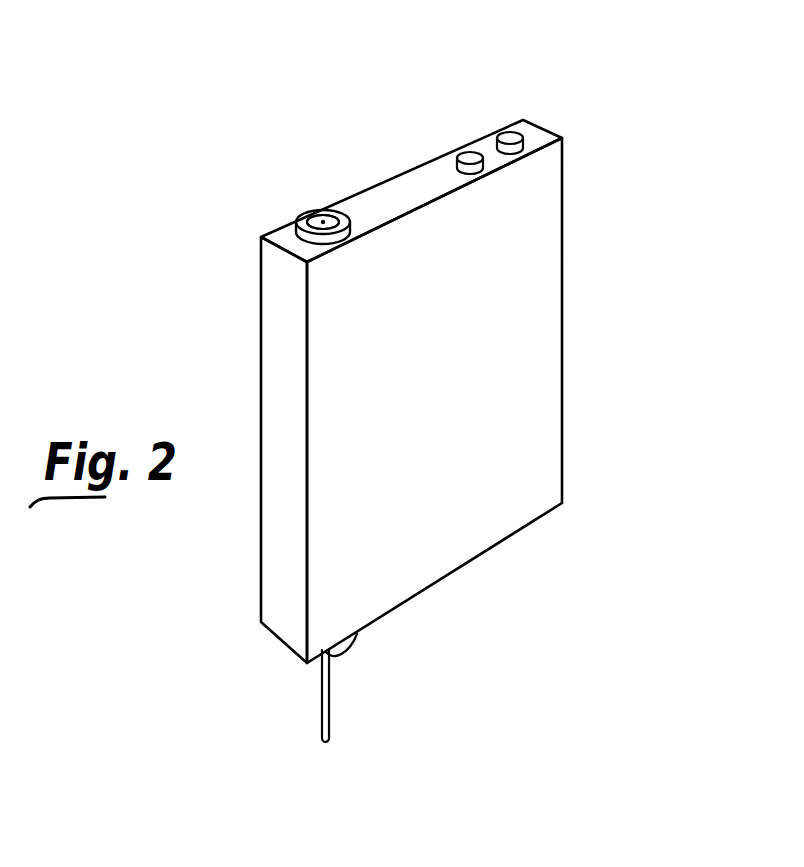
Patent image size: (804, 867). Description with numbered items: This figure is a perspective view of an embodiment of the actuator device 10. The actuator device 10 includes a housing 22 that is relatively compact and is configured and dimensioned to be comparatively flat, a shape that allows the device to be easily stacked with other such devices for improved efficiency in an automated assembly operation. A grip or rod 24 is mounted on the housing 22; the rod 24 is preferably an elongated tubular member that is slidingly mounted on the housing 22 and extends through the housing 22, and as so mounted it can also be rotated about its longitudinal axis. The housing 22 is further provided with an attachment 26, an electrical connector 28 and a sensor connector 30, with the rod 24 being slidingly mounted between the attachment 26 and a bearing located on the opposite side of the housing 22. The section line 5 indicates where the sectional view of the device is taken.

The actuator device 10 is at (583, 325).
The housing 22 is at (278, 292).
The rod 24 is at (313, 212).
The attachment 26 is at (345, 210).
The electrical connector 28 is at (467, 153).
The sensor connector 30 is at (507, 137).
The section line 5- 5 is at (552, 311).